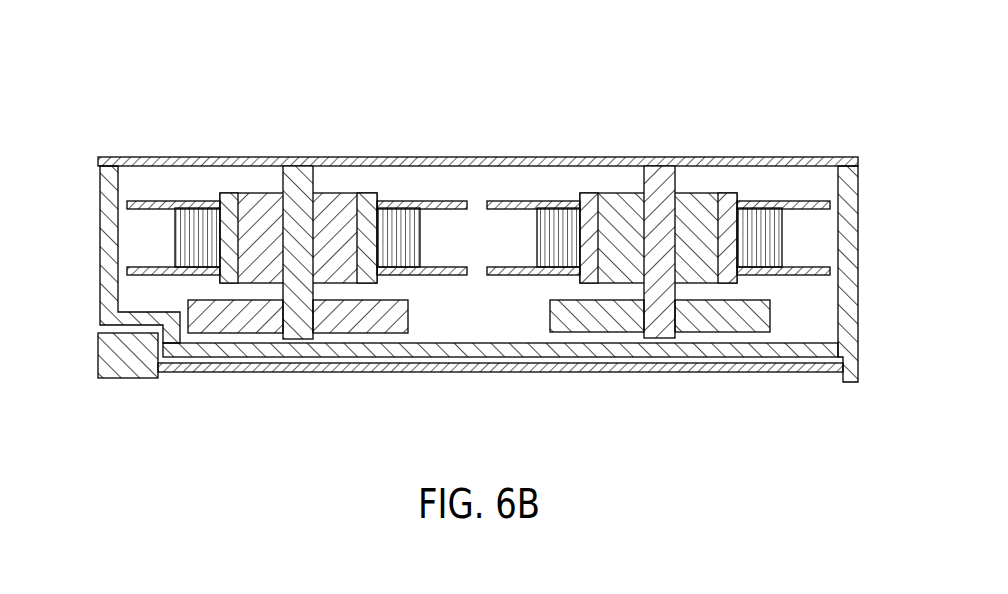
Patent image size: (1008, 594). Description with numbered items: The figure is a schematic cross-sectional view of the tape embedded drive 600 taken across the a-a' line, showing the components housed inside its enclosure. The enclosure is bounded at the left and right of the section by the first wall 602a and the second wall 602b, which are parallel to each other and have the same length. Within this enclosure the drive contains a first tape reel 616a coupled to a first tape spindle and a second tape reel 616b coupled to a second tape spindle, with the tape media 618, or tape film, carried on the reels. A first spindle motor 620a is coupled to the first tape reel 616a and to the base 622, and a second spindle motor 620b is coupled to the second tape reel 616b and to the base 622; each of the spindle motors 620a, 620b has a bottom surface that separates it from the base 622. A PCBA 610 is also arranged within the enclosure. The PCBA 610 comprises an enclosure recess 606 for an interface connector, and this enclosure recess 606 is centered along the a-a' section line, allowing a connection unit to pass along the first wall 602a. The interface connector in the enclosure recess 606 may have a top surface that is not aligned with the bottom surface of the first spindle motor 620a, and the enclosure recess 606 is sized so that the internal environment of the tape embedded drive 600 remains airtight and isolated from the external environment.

The tape embedded drive 600 is at (132, 67).
The first wall 602a is at (100, 237).
The second wall 602b is at (858, 262).
The enclosure recess 606 is at (145, 380).
The PCBA 610 is at (503, 372).
The first tape reel 616a is at (295, 158).
The second tape reel 616b is at (658, 158).
The tape media 618 is at (173, 228).
The first spindle motor 620a is at (270, 333).
The second spindle motor 620b is at (637, 333).
The base 622 is at (440, 357).